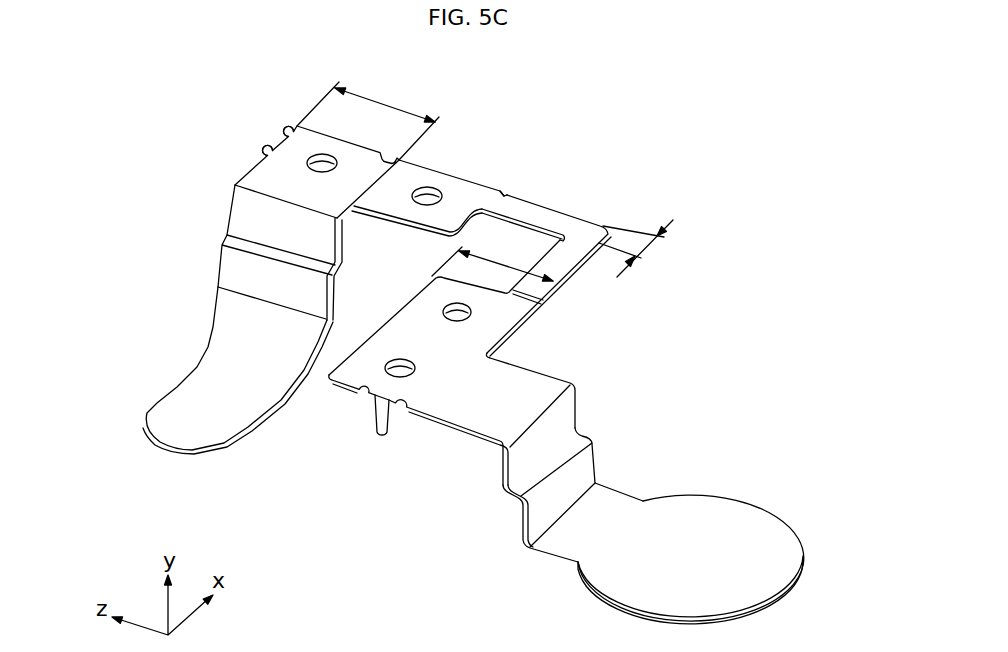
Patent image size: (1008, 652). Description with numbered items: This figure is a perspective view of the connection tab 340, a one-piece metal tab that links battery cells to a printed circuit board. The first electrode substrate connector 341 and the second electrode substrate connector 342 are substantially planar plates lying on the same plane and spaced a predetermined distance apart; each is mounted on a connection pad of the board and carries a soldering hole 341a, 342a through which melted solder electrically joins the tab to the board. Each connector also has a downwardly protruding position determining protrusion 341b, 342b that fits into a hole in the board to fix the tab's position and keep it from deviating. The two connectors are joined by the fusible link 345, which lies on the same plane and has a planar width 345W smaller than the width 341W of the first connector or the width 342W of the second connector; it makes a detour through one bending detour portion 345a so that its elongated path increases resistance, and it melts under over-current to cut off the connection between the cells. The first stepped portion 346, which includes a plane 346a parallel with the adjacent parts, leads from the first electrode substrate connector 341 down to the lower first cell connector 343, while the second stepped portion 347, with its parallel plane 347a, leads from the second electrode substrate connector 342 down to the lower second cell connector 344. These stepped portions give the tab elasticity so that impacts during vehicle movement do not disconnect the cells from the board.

The connection tab 340 is at (782, 171).
The first electrode substrate connector 341 is at (357, 373).
The soldering hole 341a is at (470, 314).
The position determining protrusion 341b is at (378, 440).
The width of the first electrode substrate connector 341W is at (492, 259).
The second electrode substrate connector 342 is at (270, 175).
The soldering hole 342a is at (427, 187).
The position determining protrusion 342b is at (271, 143).
The width of the second electrode substrate connector 342W is at (368, 121).
The first cell connector 343 is at (710, 500).
The second cell connector 344 is at (156, 413).
The fusible link 345 is at (572, 218).
The bending detour portion 345a is at (502, 192).
The planar width of the fusible link 345W is at (650, 248).
The first stepped portion 346 is at (563, 416).
The plane 346a is at (523, 490).
The second stepped portion 347 is at (243, 213).
The plane 347a is at (243, 240).